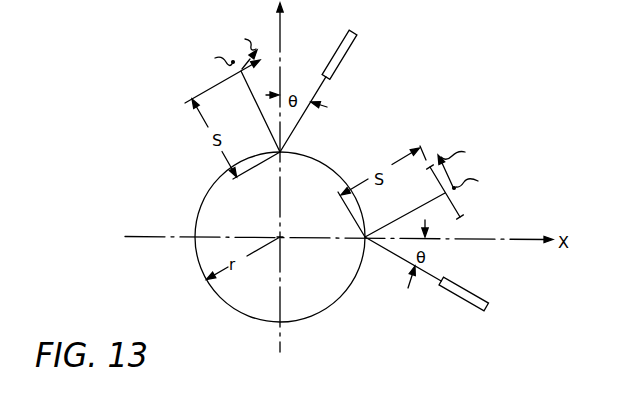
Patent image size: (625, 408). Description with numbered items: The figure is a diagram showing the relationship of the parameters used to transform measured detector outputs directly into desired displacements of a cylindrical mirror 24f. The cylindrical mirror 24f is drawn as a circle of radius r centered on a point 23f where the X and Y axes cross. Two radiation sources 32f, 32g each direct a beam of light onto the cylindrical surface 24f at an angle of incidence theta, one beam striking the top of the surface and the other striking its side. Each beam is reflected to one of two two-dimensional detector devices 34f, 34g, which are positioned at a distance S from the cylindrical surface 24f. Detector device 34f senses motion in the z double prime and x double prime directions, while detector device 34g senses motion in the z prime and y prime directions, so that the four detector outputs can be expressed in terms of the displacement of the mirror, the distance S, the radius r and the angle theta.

The center of cylindrical surface 23f is at (281, 240).
The cylindrical mirror 24f is at (195, 243).
The radiation source 32f is at (347, 56).
The radiation source 32g is at (472, 294).
The two-dimensional detector device 34f is at (207, 95).
The two-dimensional detector device 34g is at (462, 219).